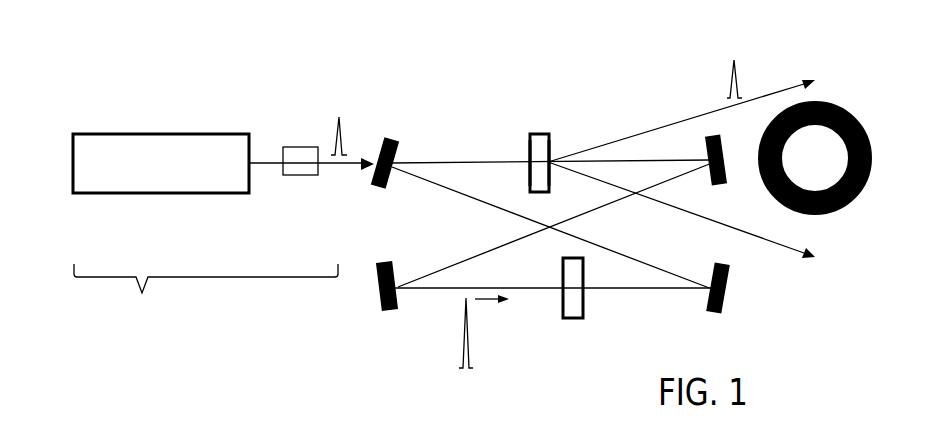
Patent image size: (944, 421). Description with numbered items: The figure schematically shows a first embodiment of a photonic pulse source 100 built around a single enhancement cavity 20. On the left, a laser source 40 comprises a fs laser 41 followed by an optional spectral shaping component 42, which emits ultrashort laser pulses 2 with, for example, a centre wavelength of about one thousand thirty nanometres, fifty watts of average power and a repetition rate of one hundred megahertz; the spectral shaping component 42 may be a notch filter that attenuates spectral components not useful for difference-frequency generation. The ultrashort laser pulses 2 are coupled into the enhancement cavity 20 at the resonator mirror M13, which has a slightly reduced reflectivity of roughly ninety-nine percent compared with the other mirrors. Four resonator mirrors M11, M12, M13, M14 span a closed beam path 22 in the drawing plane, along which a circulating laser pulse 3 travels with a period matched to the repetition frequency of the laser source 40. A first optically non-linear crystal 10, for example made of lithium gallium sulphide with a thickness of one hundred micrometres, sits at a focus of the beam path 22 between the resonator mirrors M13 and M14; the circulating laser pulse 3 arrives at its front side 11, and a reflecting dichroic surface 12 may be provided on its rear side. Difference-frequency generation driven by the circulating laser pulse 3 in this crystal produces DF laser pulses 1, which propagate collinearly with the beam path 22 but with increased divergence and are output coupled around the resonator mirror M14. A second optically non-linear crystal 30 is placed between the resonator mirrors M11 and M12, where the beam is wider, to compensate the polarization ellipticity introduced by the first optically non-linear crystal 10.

The photonic pulse source 100 is at (212, 54).
The DF laser pulses 1 is at (727, 102).
The ultrashort laser pulses 2 is at (319, 133).
The circulating laser pulse 3 is at (462, 342).
The first optically non-linear crystal 10 is at (550, 179).
The front side of the first optically non-linear crystal 11 is at (528, 148).
The reflecting dichroic surface 12 is at (553, 148).
The enhancement cavity 20 is at (437, 242).
The beam path 22 is at (484, 162).
The second optically non-linear crystal 30 is at (577, 298).
The laser source 40 is at (154, 327).
The fs laser 41 is at (142, 184).
The spectral shaping component 42 is at (306, 172).
The resonator mirror M11 is at (382, 302).
The resonator mirror M12 is at (724, 300).
The resonator mirror M13 is at (373, 183).
The resonator mirror M14 is at (727, 182).